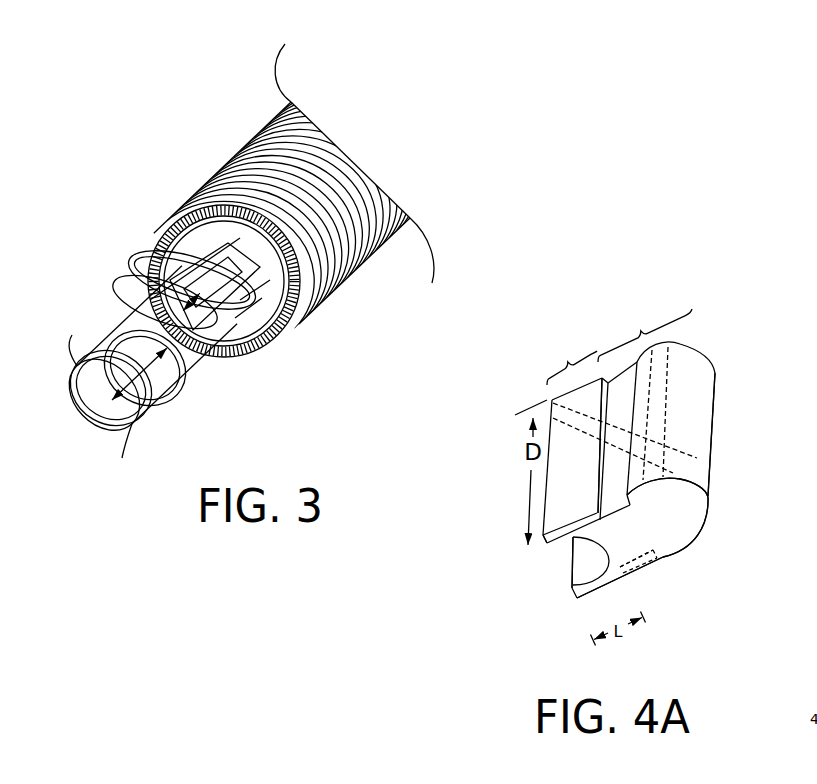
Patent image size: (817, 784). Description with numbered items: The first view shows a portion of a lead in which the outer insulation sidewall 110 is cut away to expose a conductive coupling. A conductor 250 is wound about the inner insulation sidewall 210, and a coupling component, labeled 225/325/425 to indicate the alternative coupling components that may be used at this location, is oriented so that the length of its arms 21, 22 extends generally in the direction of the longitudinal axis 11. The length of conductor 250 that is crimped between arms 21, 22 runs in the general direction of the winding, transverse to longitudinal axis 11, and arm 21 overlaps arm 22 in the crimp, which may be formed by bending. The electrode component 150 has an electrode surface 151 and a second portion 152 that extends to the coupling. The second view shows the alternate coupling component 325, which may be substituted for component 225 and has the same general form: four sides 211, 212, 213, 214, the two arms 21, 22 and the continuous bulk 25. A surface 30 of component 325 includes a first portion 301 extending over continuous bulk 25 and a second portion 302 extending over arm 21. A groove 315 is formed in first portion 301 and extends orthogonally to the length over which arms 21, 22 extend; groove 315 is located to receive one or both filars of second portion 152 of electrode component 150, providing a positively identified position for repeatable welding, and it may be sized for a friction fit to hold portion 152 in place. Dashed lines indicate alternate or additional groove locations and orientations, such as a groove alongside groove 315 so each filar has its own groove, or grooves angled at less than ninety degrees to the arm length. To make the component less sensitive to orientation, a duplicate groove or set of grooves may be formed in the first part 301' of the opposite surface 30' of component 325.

In FIG. 3, the electrode component 150 is at (172, 126).
In FIG. 3, the electrode surface 151 is at (222, 156).
In FIG. 3, the second portion 152 is at (224, 266).
In FIG. 3, the conductor 250 is at (130, 270).
In FIG. 3, the longitudinal axis 11 is at (88, 380).
In FIG. 3, the arm 21 is at (188, 367).
In FIG. 4A, the arm 21 is at (538, 541).
In FIG. 3, the arm 22 is at (254, 358).
In FIG. 4A, the arm 22 is at (571, 593).
In FIG. 3, the inner insulation sidewall 210 is at (285, 300).
In FIG. 3, the outer insulation sidewall 110 is at (300, 276).
In FIG. 3, the coupling component 225 is at (299, 366).
In FIG. 3, the coupling component 325 is at (299, 366).
In FIG. 4A, the coupling component 325 is at (438, 546).
In FIG. 3, the connector 425 is at (254, 307).
In FIG. 4A, the side 212 is at (663, 297).
In FIG. 4A, the side 213 is at (724, 398).
In FIG. 4A, the side 214 is at (520, 571).
In FIG. 4A, the continuous bulk 25 is at (673, 495).
In FIG. 4A, the side 211 is at (671, 516).
In FIG. 4A, the surface 30 is at (581, 445).
In FIG. 4A, the surface 30' is at (640, 611).
In FIG. 4A, the first portion 301 is at (656, 402).
In FIG. 4A, the first part 301' is at (706, 563).
In FIG. 4A, the second portion 302 is at (565, 645).
In FIG. 4A, the groove 315 is at (623, 397).